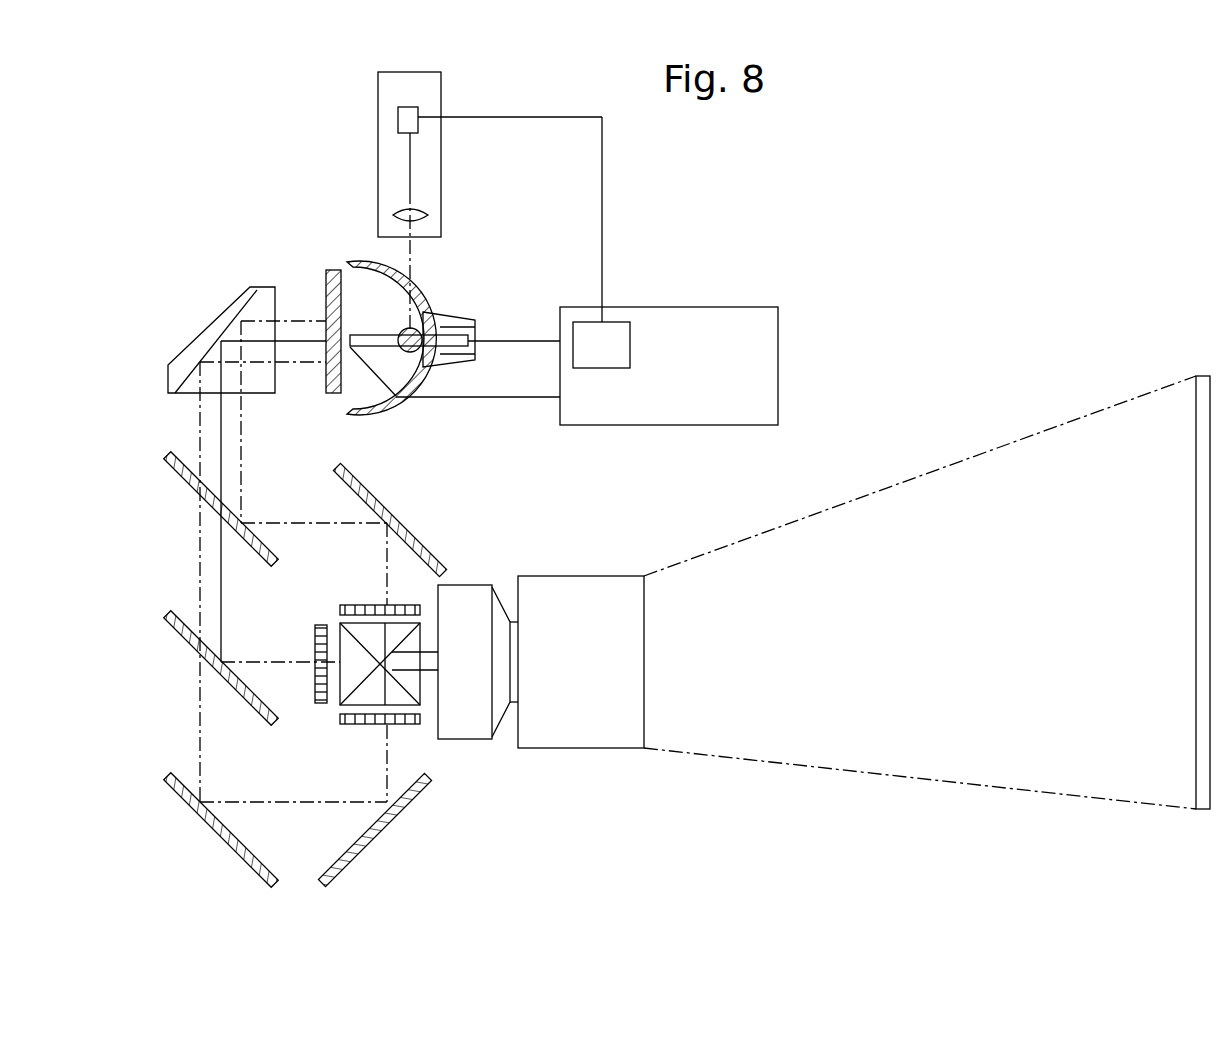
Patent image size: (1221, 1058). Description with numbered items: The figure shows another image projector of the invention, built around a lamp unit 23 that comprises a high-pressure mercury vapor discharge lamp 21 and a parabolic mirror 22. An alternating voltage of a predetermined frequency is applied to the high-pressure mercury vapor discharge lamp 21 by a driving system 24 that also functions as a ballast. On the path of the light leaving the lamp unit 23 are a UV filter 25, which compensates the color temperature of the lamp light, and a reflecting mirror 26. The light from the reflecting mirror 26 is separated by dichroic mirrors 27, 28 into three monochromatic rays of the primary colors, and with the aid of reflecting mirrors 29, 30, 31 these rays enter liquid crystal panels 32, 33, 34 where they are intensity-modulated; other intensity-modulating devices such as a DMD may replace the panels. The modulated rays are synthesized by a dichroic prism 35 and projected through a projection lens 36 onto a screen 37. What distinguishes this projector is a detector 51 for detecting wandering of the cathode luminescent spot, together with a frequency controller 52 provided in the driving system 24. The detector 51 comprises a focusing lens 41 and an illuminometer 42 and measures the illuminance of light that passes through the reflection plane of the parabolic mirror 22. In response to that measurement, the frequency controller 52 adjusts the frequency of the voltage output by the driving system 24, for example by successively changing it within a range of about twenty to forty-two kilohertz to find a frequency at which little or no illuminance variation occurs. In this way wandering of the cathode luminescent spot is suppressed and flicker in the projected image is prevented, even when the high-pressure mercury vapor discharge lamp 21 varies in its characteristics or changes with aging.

The high-pressure mercury vapor discharge lamp 21 is at (420, 329).
The parabolic mirror 22 is at (364, 262).
The lamp unit 23 is at (468, 208).
The driving system 24 is at (713, 307).
The UV filter 25 is at (326, 272).
The reflecting mirror 26 is at (233, 300).
The dichroic mirror 27 is at (168, 458).
The dichroic mirror 28 is at (168, 620).
The reflecting mirror 29 is at (168, 780).
The reflecting mirror 30 is at (377, 845).
The reflecting mirror 31 is at (372, 492).
The liquid crystal panel 32 is at (405, 604).
The liquid crystal panel 33 is at (315, 652).
The liquid crystal panel 34 is at (410, 725).
The dichroic prism 35 is at (340, 700).
The projection lens 36 is at (581, 576).
The screen 37 is at (1203, 375).
The focusing lens 41 is at (393, 211).
The illuminometer 42 is at (398, 117).
The detector 51 is at (441, 88).
The frequency controller 52 is at (617, 322).